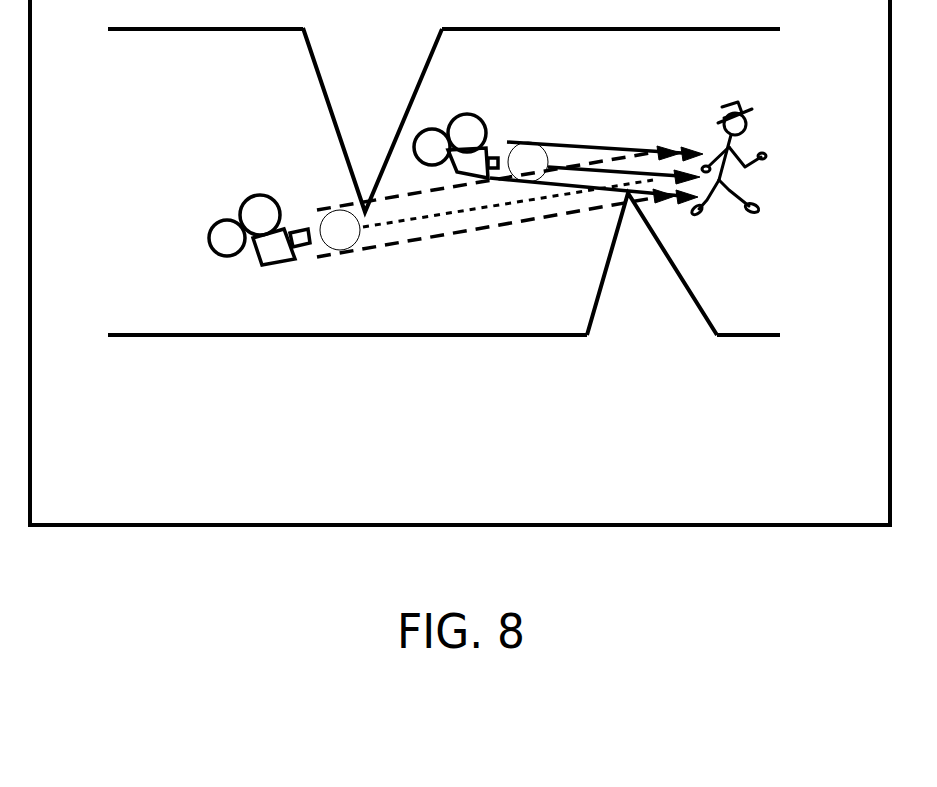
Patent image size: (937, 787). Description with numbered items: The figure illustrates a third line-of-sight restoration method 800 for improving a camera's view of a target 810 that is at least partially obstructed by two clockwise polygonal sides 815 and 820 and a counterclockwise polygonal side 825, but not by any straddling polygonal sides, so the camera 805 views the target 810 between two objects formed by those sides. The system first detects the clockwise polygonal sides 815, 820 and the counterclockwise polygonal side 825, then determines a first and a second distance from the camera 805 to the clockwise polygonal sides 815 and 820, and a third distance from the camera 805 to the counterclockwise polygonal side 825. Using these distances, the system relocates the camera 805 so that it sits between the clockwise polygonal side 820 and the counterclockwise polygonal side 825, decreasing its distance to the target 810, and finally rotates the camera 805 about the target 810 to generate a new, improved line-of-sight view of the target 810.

The third line-of-sight restoration method 800 is at (376, 392).
The camera 805 is at (256, 194).
The target 810 is at (732, 100).
The clockwise polygonal side 815 is at (330, 103).
The clockwise polygonal side 820 is at (430, 75).
The counterclockwise polygonal side 825 is at (604, 256).